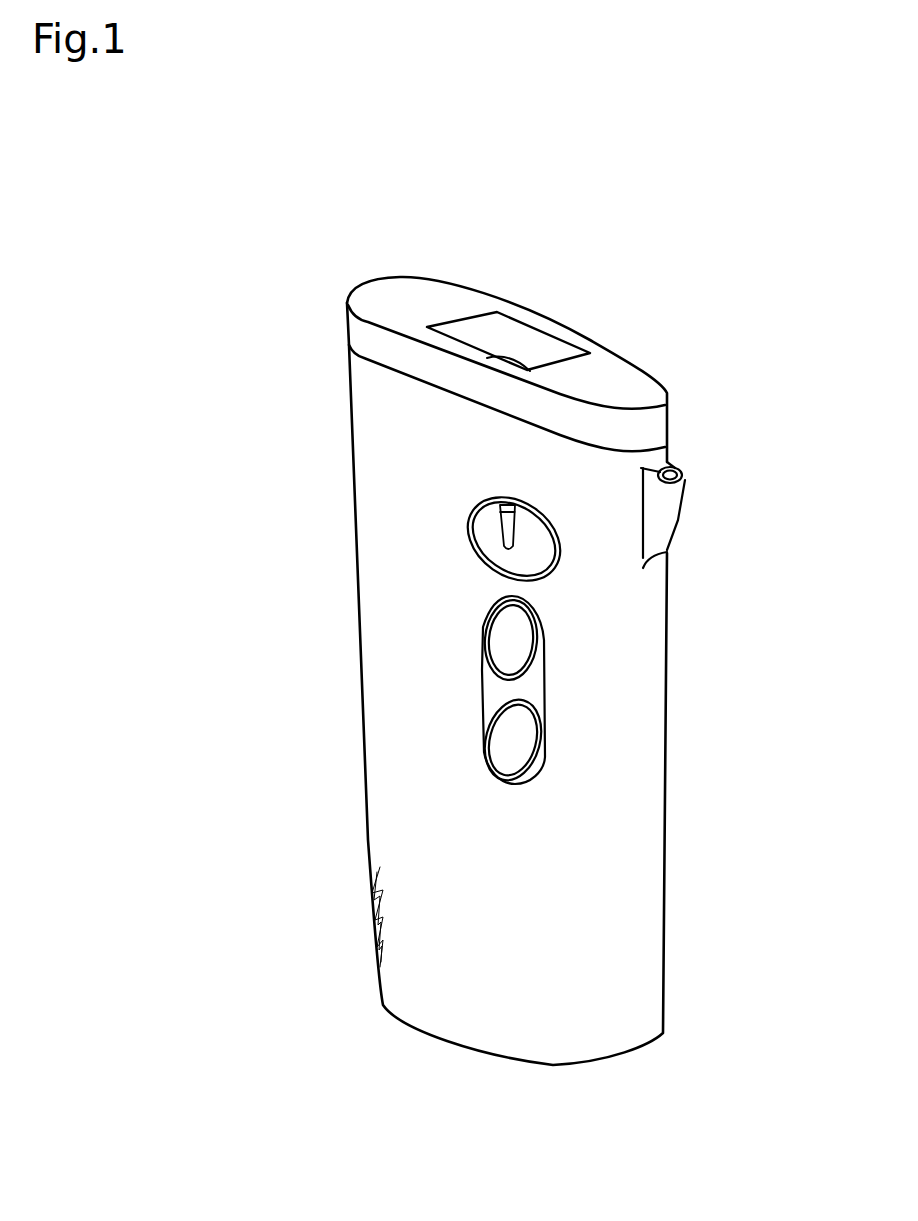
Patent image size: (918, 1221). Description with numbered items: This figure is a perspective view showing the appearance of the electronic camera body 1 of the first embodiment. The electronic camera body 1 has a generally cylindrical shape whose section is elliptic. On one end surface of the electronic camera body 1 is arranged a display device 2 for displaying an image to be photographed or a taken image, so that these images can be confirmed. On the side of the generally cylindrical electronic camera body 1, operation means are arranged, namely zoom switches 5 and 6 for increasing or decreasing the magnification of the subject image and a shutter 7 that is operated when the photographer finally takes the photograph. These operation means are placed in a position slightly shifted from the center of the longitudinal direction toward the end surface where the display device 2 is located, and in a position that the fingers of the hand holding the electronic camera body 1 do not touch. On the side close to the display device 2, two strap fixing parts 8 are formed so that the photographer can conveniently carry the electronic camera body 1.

The electronic camera body 1 is at (306, 322).
The display device 2 is at (533, 345).
The zoom switch 5 is at (513, 745).
The zoom switch 6 is at (510, 642).
The shutter 7 is at (532, 548).
The strap fixing part 8 is at (677, 467).